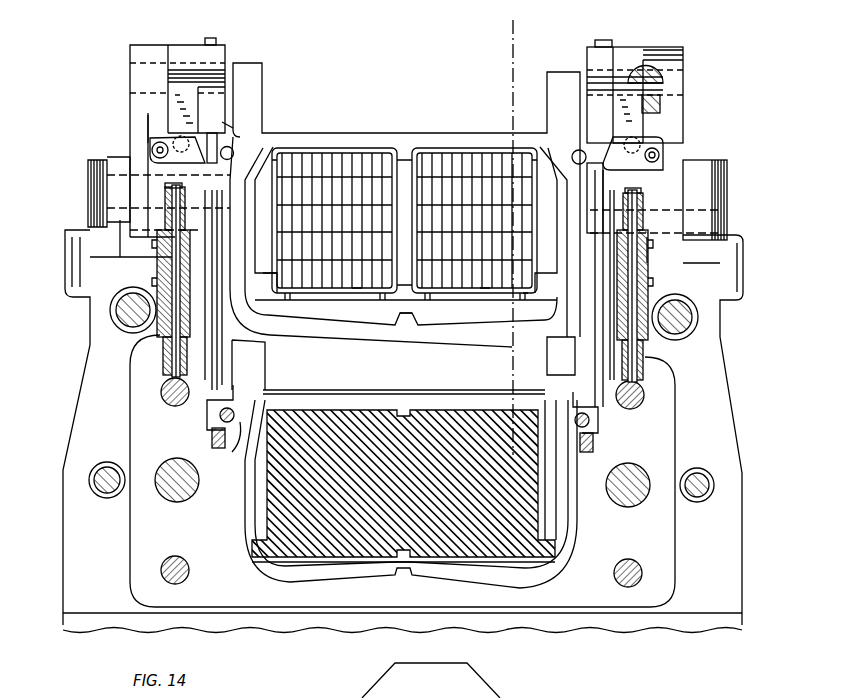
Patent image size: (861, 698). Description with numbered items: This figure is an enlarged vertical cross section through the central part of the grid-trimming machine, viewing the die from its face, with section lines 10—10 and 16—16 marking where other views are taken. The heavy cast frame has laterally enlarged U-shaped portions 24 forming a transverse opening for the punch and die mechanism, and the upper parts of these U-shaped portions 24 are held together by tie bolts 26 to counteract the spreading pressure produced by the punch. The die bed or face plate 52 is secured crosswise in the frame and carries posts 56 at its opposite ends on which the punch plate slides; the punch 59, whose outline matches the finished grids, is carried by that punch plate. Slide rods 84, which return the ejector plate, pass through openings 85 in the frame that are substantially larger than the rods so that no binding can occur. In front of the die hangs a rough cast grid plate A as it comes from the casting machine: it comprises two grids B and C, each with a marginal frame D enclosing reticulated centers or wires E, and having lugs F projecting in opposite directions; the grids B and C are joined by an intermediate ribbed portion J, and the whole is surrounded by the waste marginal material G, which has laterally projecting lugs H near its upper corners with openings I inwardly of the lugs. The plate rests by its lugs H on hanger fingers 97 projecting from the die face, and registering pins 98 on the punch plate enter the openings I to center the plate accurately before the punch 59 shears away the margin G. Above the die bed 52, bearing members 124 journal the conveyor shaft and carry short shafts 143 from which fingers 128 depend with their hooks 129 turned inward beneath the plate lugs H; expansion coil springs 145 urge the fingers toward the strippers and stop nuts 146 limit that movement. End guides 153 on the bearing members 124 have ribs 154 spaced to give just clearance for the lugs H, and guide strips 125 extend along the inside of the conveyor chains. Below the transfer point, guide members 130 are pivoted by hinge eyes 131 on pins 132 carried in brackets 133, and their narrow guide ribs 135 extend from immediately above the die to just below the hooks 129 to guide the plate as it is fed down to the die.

The section line 10- 10 is at (536, 20).
The section line 16- 16 is at (563, 163).
The U-shaped portions 24 is at (75, 415).
The tie bolts 26 is at (112, 317).
The die bed plate 52 is at (660, 548).
The posts 56 is at (187, 500).
The punch 59 is at (340, 550).
The slide rods 84 is at (90, 485).
The openings 85 is at (97, 497).
The hanger fingers 97 is at (210, 440).
The registering pins 98 is at (228, 410).
The bearing members 124 is at (130, 52).
The guide strips 125 is at (225, 182).
The fingers 128 is at (175, 100).
The hooks 129 is at (157, 158).
The guide members 130 is at (208, 359).
The hinge eyes 131 is at (160, 212).
The pins 132 is at (167, 382).
The brackets 133 is at (160, 340).
The guide ribs 135 is at (262, 382).
The short shafts 143 is at (653, 83).
The expansion coil springs 145 is at (148, 126).
The stop nuts 146 is at (660, 157).
The end guides 153 is at (194, 140).
The ribs 154 is at (222, 122).
The grid plate A is at (332, 136).
The grid B is at (352, 162).
The grid C is at (457, 158).
The marginal frames D is at (356, 282).
The reticulated centers E is at (480, 165).
The lugs F is at (268, 272).
The marginal frame G is at (445, 318).
The lugs H is at (207, 412).
The openings I is at (232, 452).
The intermediate ribbed portion J is at (405, 150).